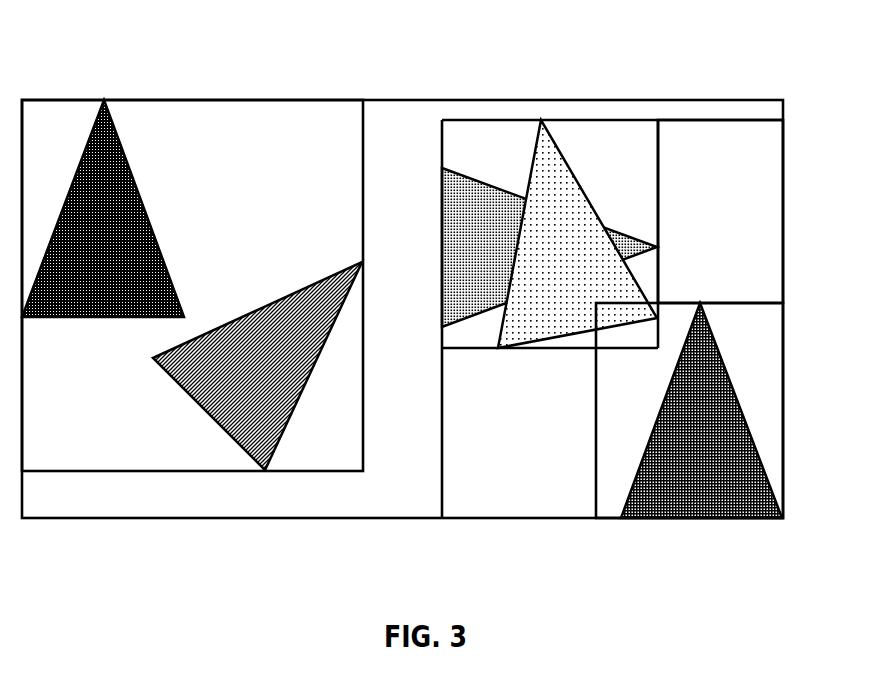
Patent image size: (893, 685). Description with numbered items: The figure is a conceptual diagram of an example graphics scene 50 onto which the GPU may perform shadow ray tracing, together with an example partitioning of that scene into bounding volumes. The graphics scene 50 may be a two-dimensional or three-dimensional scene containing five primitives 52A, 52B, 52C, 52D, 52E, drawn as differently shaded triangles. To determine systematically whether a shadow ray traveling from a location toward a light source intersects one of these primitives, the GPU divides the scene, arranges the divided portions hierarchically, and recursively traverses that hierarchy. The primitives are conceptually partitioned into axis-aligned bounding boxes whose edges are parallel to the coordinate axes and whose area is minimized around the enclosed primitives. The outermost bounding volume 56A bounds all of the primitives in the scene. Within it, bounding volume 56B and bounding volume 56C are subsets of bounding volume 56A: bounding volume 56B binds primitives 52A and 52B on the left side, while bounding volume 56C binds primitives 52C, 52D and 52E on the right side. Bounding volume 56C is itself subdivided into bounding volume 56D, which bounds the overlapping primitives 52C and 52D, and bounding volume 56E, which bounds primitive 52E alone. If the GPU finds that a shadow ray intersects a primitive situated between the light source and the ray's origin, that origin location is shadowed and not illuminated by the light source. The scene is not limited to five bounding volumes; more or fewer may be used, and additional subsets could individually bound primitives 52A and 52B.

The graphics scene 50 is at (646, 56).
The primitive 52A is at (115, 126).
The primitive 52B is at (283, 433).
The primitive 52C is at (444, 167).
The primitive 52D is at (563, 160).
The primitive 52E is at (710, 326).
The bounding volume 56A is at (385, 99).
The bounding volume 56B is at (364, 172).
The bounding volume 56C is at (683, 119).
The bounding volume 56D is at (660, 163).
The bounding volume 56E is at (704, 299).